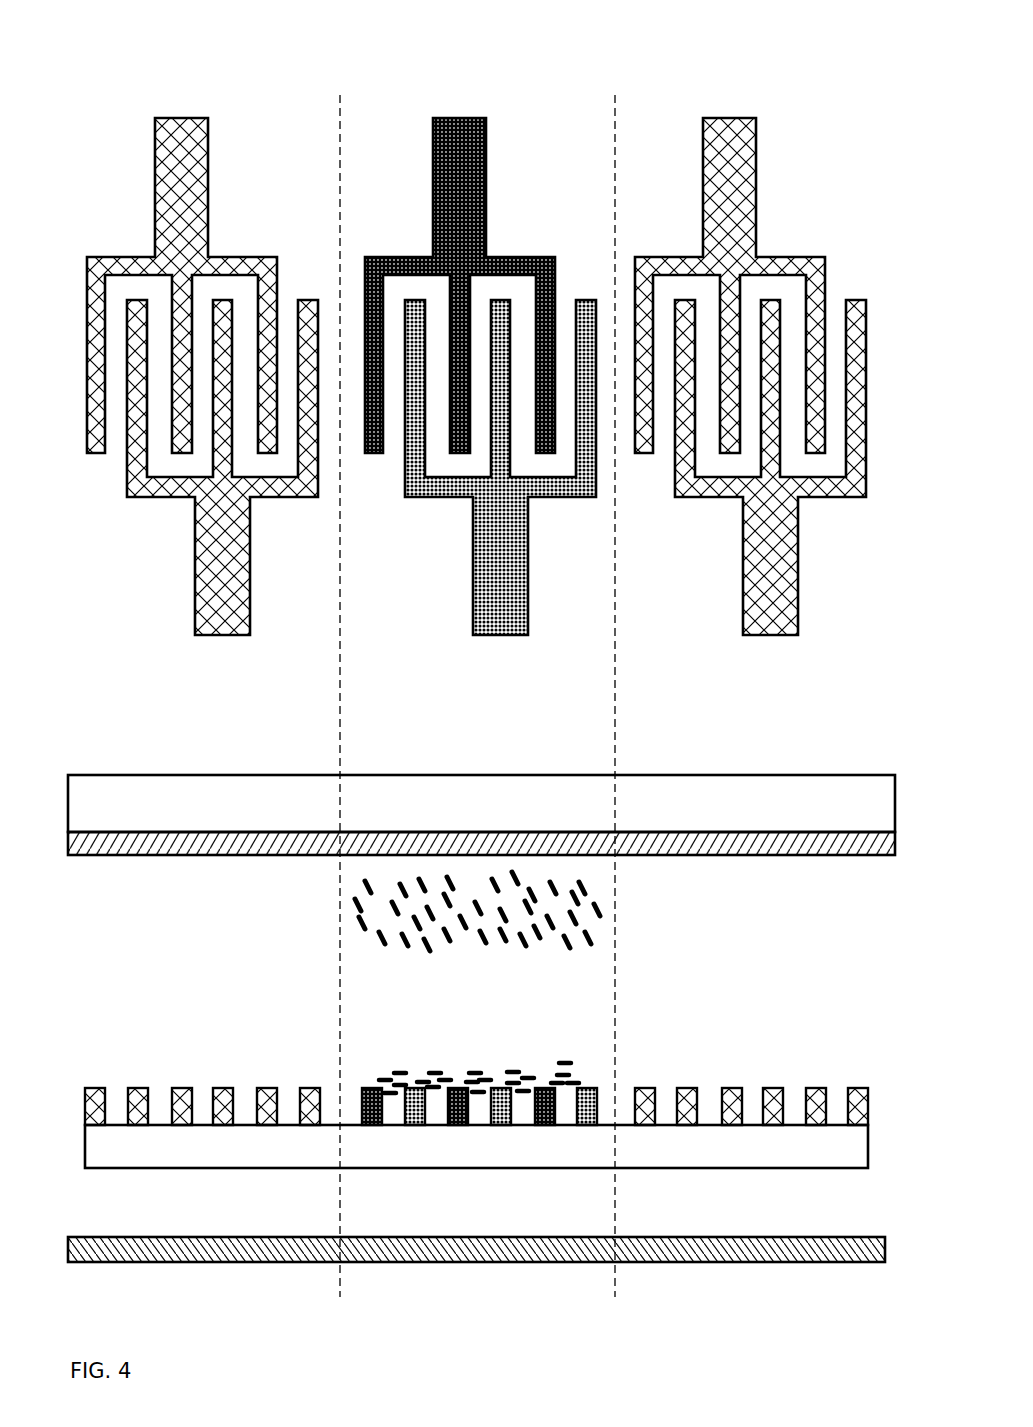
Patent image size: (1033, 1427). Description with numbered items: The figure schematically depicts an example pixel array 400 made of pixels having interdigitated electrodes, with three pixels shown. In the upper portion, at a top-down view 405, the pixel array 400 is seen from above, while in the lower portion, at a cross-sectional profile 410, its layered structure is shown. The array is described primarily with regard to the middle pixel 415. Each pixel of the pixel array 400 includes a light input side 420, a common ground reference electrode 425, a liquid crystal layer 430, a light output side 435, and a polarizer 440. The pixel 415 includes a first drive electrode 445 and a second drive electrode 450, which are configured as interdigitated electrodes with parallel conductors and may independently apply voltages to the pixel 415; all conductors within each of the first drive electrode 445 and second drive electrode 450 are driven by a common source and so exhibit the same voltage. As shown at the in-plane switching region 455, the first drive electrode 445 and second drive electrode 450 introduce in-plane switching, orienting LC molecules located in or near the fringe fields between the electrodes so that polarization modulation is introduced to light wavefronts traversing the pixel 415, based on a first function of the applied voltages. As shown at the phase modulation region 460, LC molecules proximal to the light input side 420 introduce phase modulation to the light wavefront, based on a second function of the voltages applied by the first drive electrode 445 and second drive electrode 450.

The pixel array 400 is at (823, 30).
The top-down view 405 is at (120, 92).
The cross-sectional profile 410 is at (105, 710).
The pixel 415 is at (527, 122).
The light input side 420 is at (868, 816).
The common ground reference electrode 425 is at (807, 855).
The liquid crystal layer 430 is at (807, 932).
The light output side 435 is at (856, 1157).
The polarizer 440 is at (817, 1262).
The first drive electrode 445 is at (496, 252).
The second drive electrode 450 is at (448, 498).
The in-plane switching region 455 is at (478, 1052).
The phase modulation region 460 is at (473, 957).